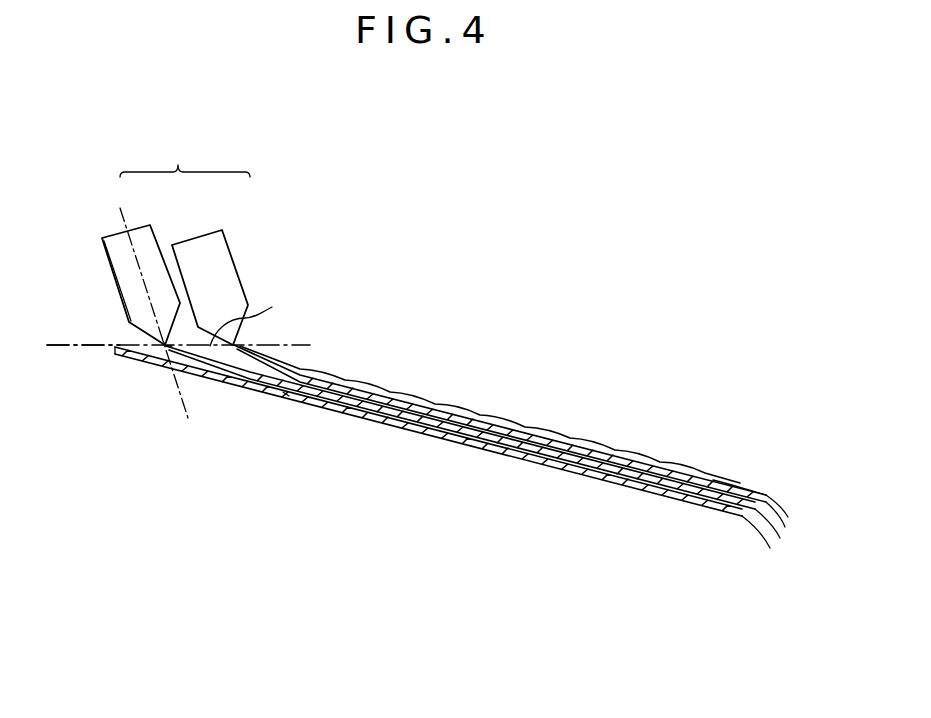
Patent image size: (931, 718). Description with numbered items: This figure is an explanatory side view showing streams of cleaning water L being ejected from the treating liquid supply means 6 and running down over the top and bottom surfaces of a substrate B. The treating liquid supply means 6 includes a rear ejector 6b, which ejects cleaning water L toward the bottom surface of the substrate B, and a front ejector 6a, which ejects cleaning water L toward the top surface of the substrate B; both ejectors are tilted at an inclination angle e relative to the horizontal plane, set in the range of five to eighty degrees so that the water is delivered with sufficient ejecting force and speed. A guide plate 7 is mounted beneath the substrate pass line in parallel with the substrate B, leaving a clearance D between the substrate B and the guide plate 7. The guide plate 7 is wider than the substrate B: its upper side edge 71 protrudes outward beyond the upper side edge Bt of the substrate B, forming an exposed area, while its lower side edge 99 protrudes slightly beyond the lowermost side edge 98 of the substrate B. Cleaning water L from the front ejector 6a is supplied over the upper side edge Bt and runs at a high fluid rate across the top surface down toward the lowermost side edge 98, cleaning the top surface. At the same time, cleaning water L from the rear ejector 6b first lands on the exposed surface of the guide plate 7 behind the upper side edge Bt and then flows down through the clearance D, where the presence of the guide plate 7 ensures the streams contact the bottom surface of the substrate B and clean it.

The treating liquid supply means 6 is at (185, 155).
The front ejector 6a is at (205, 245).
The rear ejector 6b is at (139, 240).
The upper side edge of guide plate 71 is at (120, 344).
The inclination angle θ e is at (163, 341).
The upper side edge of substrate Bt is at (255, 317).
The guide plate 7 is at (377, 425).
The cleaning water L is at (573, 433).
The substrate B is at (465, 410).
The clearance D is at (285, 392).
The lowermost side edge of substrate 98 is at (713, 480).
The lower side edge of guide plate 99 is at (745, 510).